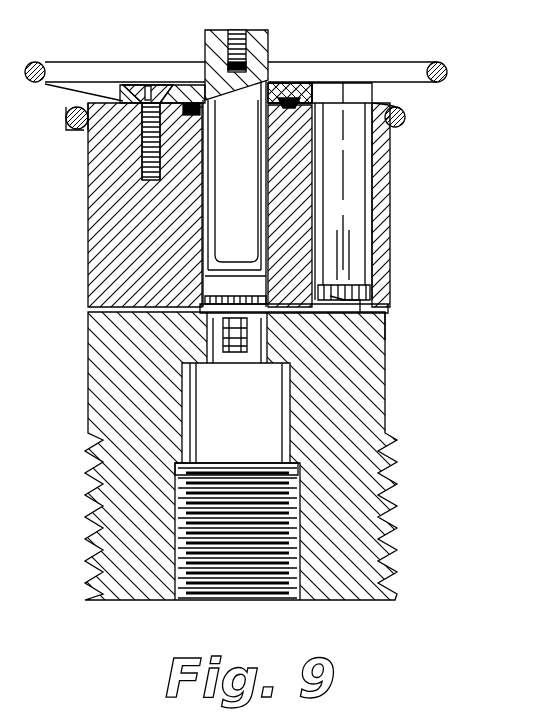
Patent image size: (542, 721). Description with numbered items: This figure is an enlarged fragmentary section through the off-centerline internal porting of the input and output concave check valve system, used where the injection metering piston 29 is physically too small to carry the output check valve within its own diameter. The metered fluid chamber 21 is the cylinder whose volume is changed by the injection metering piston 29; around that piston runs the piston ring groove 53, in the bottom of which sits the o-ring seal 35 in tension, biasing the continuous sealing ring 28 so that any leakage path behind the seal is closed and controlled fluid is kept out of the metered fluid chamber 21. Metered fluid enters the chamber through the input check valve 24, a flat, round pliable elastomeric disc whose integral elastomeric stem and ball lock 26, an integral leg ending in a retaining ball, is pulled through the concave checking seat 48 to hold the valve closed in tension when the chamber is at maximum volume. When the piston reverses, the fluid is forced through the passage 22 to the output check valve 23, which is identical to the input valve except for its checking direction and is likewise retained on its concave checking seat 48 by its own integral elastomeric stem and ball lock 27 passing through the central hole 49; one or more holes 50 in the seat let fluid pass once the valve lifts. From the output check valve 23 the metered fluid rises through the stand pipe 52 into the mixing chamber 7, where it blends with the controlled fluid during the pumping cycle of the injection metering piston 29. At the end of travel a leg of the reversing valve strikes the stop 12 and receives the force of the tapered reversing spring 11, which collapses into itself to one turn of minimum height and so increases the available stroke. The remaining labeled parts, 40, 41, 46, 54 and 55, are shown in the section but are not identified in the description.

The mixing chamber 7 is at (353, 88).
The reversing spring 11 is at (397, 68).
The stop 12 is at (105, 101).
The metered fluid chamber 21 is at (205, 274).
The passage 22 is at (375, 310).
The output check valve 23 is at (343, 278).
The input check valve 24 is at (235, 280).
The integral elastomeric stem and ball lock 26 is at (240, 355).
The integral elastomeric stem and ball lock 27 is at (386, 338).
The continuous sealing ring 28 is at (200, 109).
The injection metering piston 29 is at (258, 163).
The o-ring seal 35 is at (300, 88).
The upper body 40 is at (106, 250).
The threaded lower body 41 is at (372, 455).
The set screw 46 is at (234, 50).
The concave checking seat 48 is at (358, 224).
The central hole 49 is at (205, 326).
The holes 50 is at (330, 300).
The stand pipe 52 is at (358, 163).
The piston ring groove 53 is at (214, 129).
The gland 54 is at (287, 92).
The screw 55 is at (146, 88).